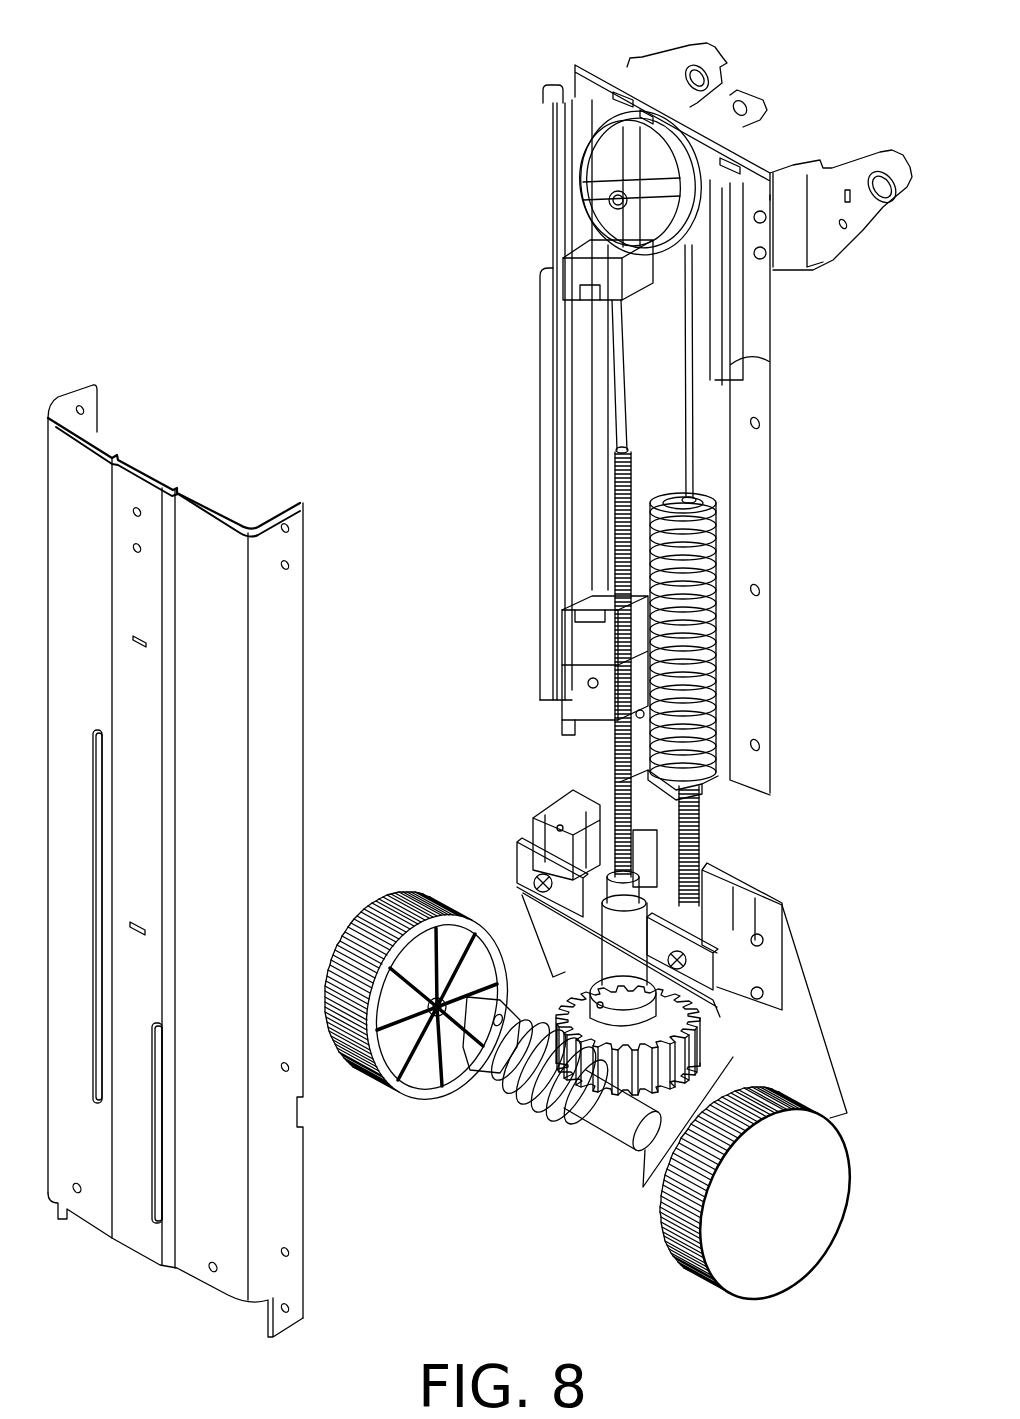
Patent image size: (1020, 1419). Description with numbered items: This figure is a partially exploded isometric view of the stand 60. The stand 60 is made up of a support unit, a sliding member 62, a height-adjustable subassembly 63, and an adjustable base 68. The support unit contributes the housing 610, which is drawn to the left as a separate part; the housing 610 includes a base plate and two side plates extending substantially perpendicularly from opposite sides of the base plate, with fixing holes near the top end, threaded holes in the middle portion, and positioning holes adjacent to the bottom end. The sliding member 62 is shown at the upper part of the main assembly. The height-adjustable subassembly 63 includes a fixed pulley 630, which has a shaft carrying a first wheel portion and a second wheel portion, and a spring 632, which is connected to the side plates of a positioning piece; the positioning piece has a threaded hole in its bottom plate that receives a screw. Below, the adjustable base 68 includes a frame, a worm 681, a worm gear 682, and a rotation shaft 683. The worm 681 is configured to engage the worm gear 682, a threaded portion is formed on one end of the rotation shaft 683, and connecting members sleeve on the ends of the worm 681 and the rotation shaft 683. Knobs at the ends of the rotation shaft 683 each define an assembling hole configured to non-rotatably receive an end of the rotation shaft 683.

The stand 60 is at (287, 137).
The housing 610 is at (63, 480).
The sliding member 62 is at (773, 165).
The fixed pulley 630 is at (583, 180).
The spring 632 is at (720, 565).
The height-adjustable subassembly 63 is at (578, 648).
The rotation shaft 683 is at (620, 760).
The adjustable base 68 is at (812, 940).
The worm gear 682 is at (667, 1057).
The worm 681 is at (608, 1112).